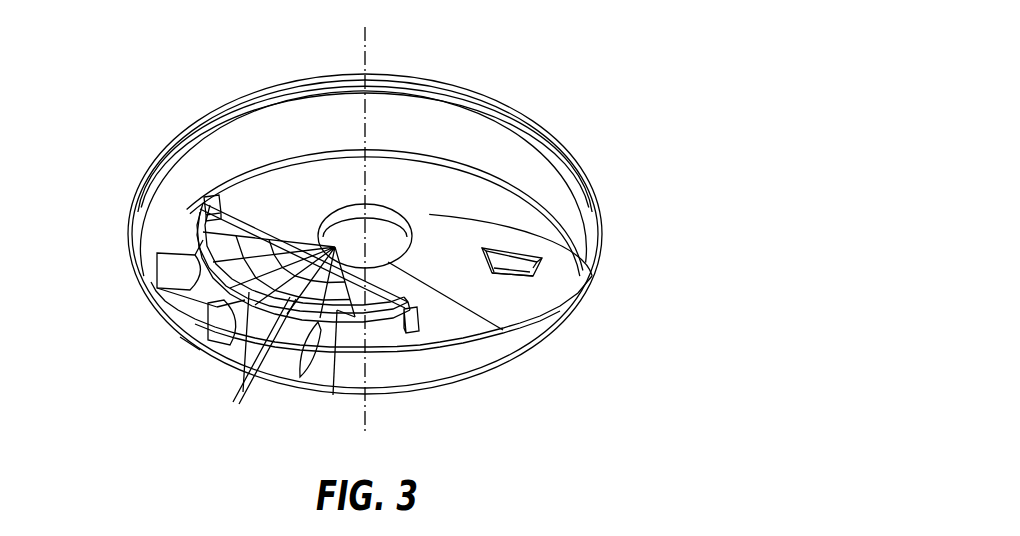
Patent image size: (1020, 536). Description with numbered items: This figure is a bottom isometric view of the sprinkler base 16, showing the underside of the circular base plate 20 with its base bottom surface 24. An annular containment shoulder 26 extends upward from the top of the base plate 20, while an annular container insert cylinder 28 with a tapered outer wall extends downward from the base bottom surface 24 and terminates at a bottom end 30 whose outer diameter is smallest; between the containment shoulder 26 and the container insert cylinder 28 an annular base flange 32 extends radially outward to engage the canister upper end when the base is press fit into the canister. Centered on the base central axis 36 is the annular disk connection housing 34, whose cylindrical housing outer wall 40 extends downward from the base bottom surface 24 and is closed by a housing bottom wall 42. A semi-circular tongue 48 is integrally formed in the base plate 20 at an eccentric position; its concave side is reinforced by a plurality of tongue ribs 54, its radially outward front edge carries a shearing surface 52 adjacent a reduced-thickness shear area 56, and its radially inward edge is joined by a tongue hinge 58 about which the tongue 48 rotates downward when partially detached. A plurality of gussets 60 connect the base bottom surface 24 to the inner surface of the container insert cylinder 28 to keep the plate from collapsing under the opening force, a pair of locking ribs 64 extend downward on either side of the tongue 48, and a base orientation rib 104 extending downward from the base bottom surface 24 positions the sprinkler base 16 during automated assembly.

The sprinkler base 16 is at (634, 120).
The base plate 20 is at (473, 200).
The base bottom surface 24 is at (371, 251).
The containment shoulder 26 is at (302, 80).
The container insert cylinder 28 is at (152, 203).
The bottom end 30 is at (494, 377).
The base flange 32 is at (597, 219).
The disk connection housing 34 is at (505, 242).
The base central axis 36 is at (368, 50).
The housing outer wall 40 is at (509, 255).
The housing bottom wall 42 is at (385, 258).
The tongue 48 is at (373, 297).
The shearing surface 52 is at (353, 310).
The tongue ribs 54 is at (279, 330).
The shear area 56 is at (190, 300).
The tongue hinge 58 is at (209, 198).
The gussets 60 is at (170, 270).
The locking ribs 64 is at (210, 203).
The base orientation rib 104 is at (513, 278).